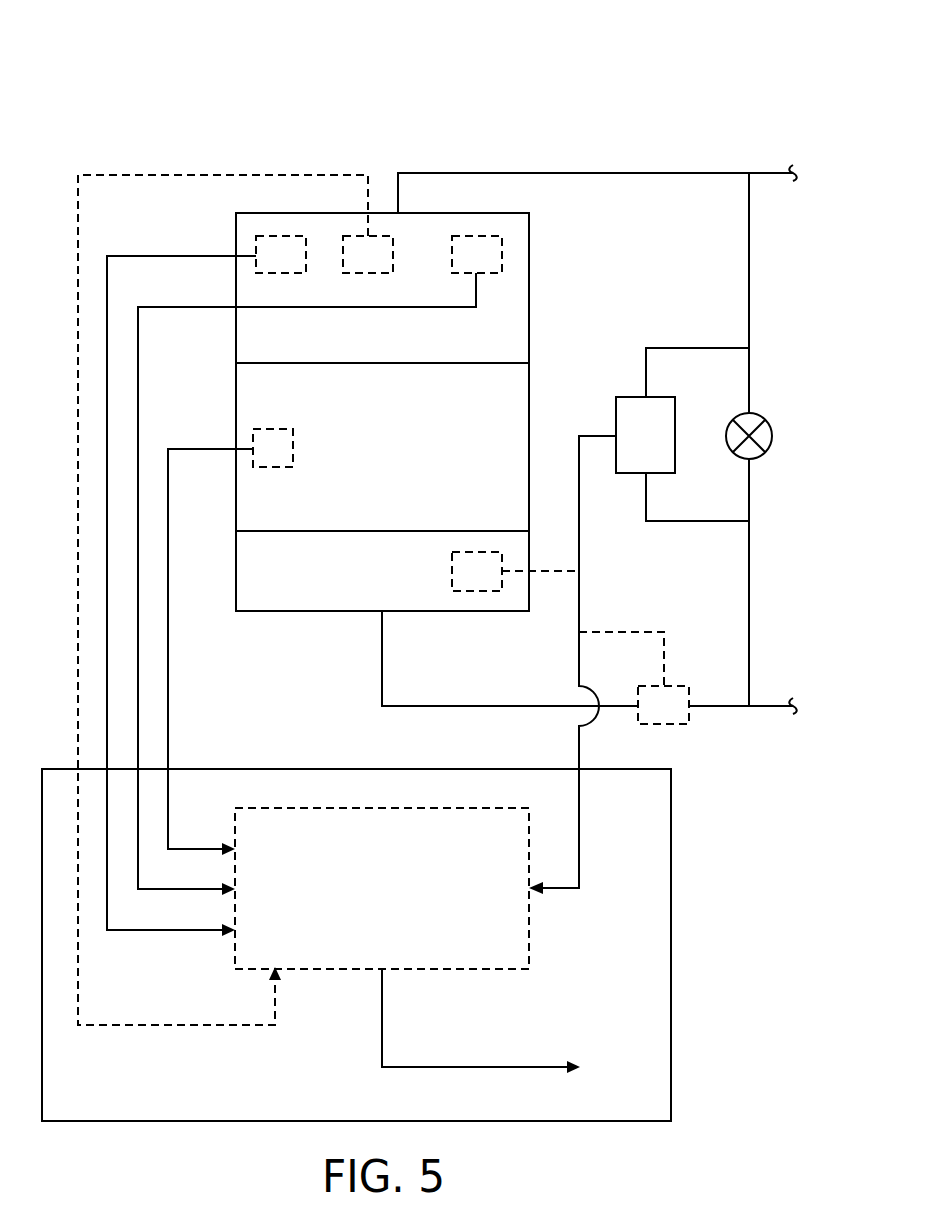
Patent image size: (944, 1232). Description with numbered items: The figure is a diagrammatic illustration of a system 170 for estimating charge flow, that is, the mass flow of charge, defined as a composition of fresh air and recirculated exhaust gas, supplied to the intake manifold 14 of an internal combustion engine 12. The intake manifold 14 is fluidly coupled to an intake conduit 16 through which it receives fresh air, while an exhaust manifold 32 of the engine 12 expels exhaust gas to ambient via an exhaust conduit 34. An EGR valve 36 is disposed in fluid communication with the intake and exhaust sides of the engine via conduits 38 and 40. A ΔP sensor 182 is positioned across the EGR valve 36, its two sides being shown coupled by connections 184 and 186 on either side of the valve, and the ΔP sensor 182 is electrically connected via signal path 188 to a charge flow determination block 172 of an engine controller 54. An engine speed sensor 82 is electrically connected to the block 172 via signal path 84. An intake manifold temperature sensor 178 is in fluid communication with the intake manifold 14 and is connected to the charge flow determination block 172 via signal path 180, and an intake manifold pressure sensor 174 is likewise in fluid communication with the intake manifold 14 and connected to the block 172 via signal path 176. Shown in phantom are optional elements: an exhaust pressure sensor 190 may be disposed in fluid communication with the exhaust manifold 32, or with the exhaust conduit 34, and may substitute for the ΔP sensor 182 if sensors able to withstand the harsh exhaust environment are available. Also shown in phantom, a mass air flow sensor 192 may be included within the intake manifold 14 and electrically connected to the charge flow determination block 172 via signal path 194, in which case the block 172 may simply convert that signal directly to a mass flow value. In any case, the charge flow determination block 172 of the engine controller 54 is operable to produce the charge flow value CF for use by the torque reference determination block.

The system 170 is at (296, 94).
The signal path 194 is at (207, 175).
The intake manifold 14 is at (529, 312).
The internal combustion engine 12 is at (529, 395).
The exhaust manifold 32 is at (272, 611).
The intake conduit 16 is at (628, 173).
The conduit 40 is at (749, 240).
The EGR valve 36 is at (761, 420).
The conduit 38 is at (749, 612).
The exhaust conduit 34 is at (416, 706).
The ΔP sensor upstream connection 184 is at (678, 348).
The ΔP sensor 182 is at (632, 473).
The ΔP sensor downstream connection 186 is at (688, 521).
The signal path 188 is at (579, 606).
The exhaust pressure sensor 190 is at (483, 591).
The intake manifold temperature sensor 178 is at (290, 236).
The mass air flow sensor 192 is at (393, 262).
The intake manifold pressure sensor 174 is at (470, 236).
The engine speed sensor 82 is at (273, 429).
The signal path 180 is at (182, 256).
The signal path 176 is at (208, 307).
The signal path 84 is at (207, 449).
The engine controller 54 is at (198, 769).
The charge flow determination block 172 is at (529, 946).